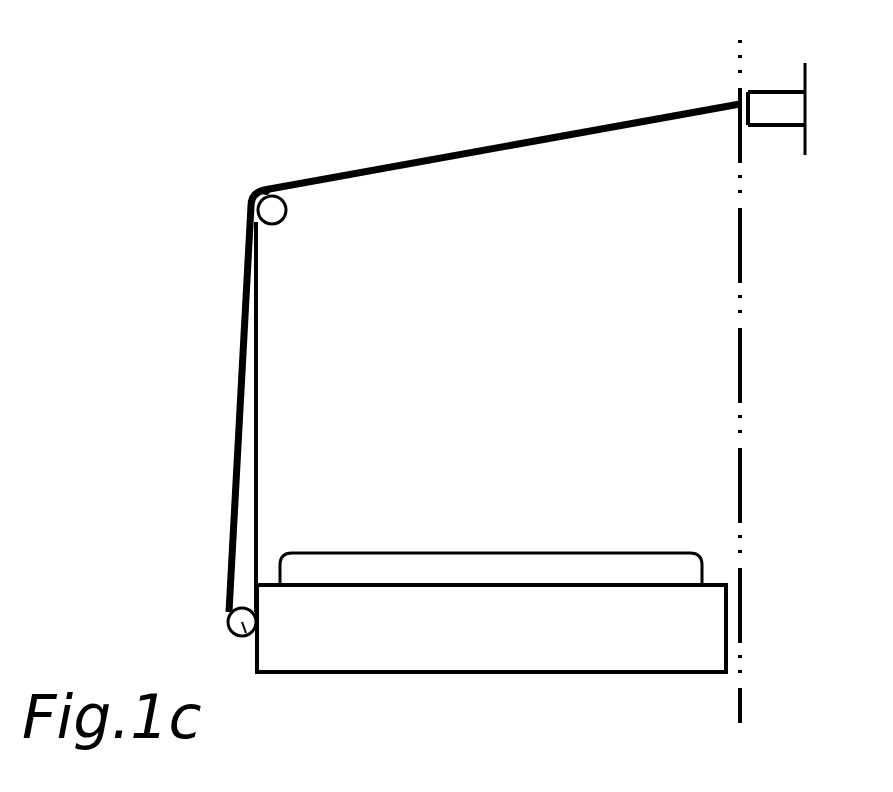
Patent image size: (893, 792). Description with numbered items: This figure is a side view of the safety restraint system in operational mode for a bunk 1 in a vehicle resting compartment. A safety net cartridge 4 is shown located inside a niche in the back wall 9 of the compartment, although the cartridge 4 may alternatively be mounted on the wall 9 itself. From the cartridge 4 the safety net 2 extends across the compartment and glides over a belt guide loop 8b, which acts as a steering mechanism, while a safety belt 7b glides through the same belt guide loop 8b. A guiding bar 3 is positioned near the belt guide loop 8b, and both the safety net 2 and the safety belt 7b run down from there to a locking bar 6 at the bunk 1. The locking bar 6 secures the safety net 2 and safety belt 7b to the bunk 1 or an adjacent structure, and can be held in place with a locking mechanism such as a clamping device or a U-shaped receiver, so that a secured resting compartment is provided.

The bunk 1 is at (462, 572).
The safety net 2 is at (517, 141).
The guiding bar 3 is at (272, 212).
The safety net cartridge 4 is at (772, 112).
The locking bar 6 is at (235, 638).
The safety belt 7b is at (479, 162).
The belt guide loop 8b is at (290, 185).
The back wall 9 is at (733, 305).